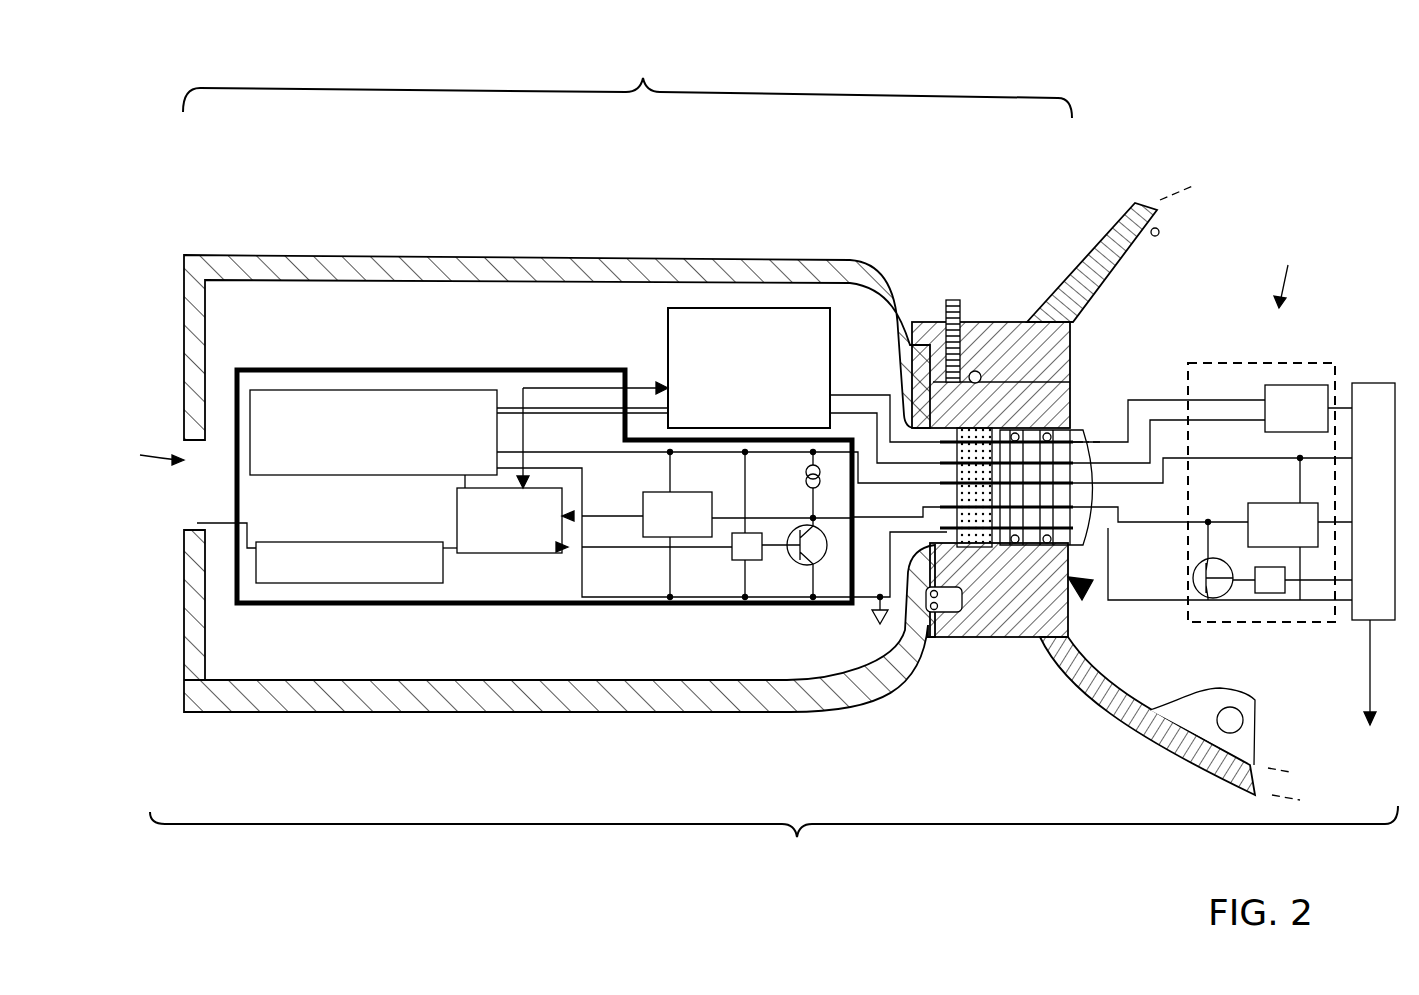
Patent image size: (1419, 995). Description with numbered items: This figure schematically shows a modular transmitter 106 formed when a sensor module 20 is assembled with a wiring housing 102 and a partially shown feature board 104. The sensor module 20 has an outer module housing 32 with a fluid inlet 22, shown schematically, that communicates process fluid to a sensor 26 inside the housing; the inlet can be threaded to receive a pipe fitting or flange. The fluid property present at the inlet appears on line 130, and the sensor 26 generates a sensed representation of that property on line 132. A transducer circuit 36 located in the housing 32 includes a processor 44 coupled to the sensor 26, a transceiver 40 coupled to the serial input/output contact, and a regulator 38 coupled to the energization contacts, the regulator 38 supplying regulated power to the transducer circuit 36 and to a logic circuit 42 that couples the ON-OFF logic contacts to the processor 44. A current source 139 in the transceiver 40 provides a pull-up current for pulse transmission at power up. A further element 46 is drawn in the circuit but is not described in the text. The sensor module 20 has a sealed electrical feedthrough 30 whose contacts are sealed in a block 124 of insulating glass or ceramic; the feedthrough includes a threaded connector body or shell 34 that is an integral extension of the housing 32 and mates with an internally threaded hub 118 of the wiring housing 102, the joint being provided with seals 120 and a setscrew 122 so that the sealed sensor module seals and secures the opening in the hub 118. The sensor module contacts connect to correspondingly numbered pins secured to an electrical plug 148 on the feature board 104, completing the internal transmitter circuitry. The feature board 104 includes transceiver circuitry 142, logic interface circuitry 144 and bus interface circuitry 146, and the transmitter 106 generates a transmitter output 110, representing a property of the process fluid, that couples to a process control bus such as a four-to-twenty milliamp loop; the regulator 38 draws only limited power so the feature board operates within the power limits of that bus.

The sensor module 20 is at (627, 78).
The fluid inlet 22 is at (147, 451).
The sensor 26 is at (267, 583).
The sealed electrical feedthrough 30 is at (1090, 604).
The outer module housing 32 is at (495, 680).
The threaded connector body or shell 34 is at (1097, 393).
The transducer circuit 36 is at (250, 368).
The regulator 38 is at (304, 390).
The transceiver 40 is at (852, 619).
The logic circuit 42 is at (708, 308).
The processor 44 is at (495, 553).
The control line 46 is at (642, 387).
The wiring housing 102 is at (1133, 222).
The feature board 104 is at (1294, 250).
The modular transmitter 106 is at (774, 849).
The transmitter output 110 is at (1370, 672).
The internally threaded hub 118 is at (1017, 327).
The seals 120 is at (987, 637).
The setscrew 122 is at (950, 300).
The block of insulating glass or ceramic 124 is at (1005, 640).
The line 130 is at (221, 528).
The line 132 is at (453, 545).
The current source 139 is at (806, 480).
The transceiver circuitry 142 is at (1265, 636).
The logic interface circuitry 144 is at (1321, 425).
The bus interface circuitry 146 is at (1374, 501).
The electrical plug 148 is at (1118, 392).